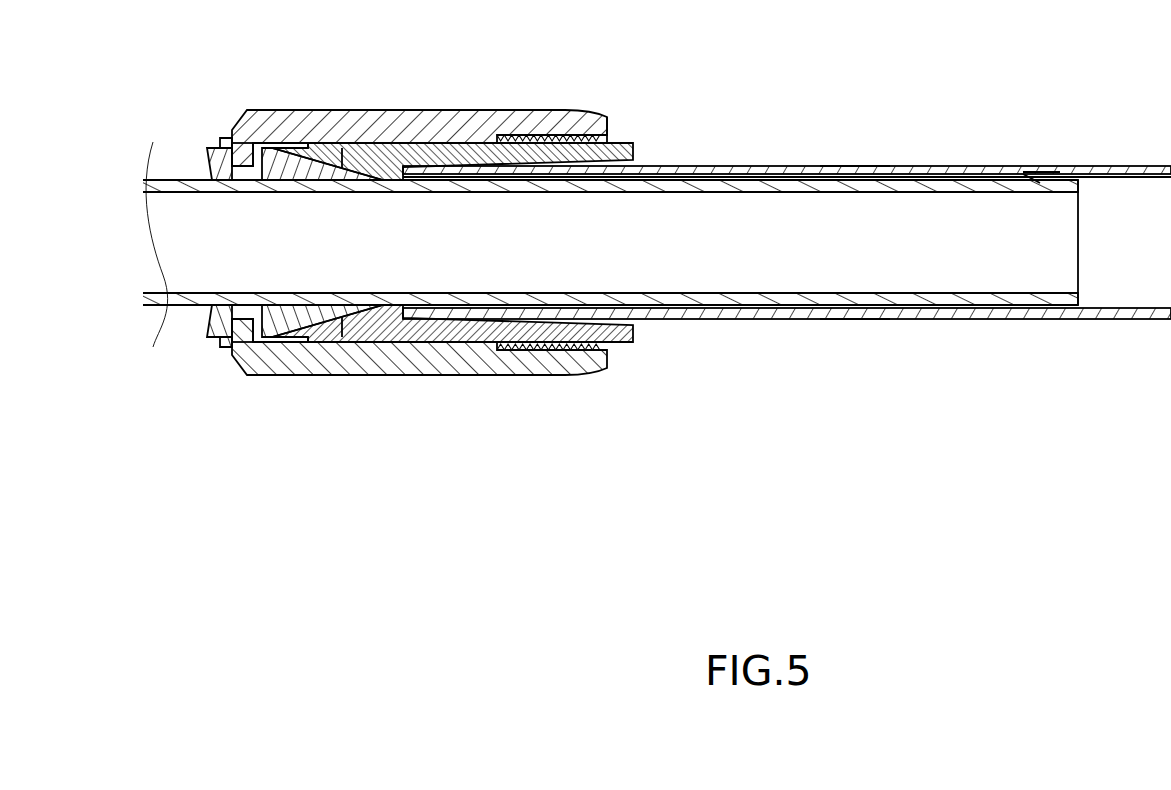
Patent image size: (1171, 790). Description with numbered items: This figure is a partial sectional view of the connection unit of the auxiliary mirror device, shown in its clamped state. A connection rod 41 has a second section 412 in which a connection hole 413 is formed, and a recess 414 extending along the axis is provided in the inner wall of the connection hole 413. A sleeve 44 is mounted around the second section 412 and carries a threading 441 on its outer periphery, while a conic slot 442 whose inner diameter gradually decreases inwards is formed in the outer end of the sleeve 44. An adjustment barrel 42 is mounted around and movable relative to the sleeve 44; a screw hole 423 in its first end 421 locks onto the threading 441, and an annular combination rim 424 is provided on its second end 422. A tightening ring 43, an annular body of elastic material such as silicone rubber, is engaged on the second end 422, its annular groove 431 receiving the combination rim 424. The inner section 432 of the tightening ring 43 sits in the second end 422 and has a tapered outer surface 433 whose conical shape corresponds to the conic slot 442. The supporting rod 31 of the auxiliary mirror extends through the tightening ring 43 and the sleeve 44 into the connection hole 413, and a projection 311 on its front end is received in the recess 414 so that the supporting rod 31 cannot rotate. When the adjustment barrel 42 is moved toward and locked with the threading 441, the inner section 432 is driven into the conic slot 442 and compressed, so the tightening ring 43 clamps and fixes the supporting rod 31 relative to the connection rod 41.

The supporting rod 31 is at (762, 300).
The projection 311 is at (1022, 172).
The connection rod 41 is at (935, 168).
The second section 412 is at (652, 166).
The connection hole 413 is at (852, 320).
The recess 414 is at (858, 168).
The adjustment barrel 42 is at (500, 110).
The first end 421 is at (560, 138).
The second end 422 is at (245, 110).
The screw hole 423 is at (557, 345).
The annular combination rim 424 is at (235, 150).
The tightening ring 43 is at (208, 343).
The annular groove 431 is at (248, 345).
The inner section 432 is at (318, 147).
The tapered outer surface 433 is at (320, 348).
The sleeve 44 is at (432, 163).
The threading 441 is at (600, 122).
The conic slot 442 is at (366, 150).